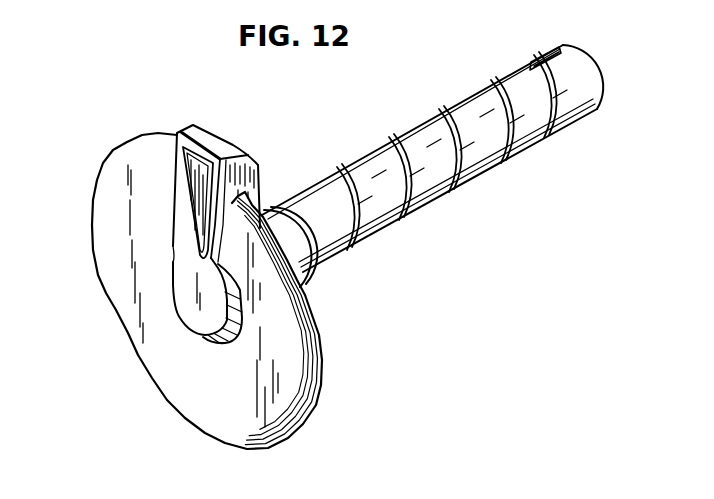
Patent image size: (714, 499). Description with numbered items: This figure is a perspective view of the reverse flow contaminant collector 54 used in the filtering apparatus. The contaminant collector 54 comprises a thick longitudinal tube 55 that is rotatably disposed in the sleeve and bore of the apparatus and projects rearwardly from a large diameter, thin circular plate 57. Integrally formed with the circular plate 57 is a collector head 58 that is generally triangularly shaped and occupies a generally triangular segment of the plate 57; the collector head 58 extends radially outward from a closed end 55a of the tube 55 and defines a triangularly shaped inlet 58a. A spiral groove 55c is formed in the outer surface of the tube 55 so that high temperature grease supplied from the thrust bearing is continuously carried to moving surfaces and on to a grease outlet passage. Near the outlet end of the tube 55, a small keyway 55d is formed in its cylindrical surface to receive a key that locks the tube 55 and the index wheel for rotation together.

The contaminant collector 54 is at (326, 227).
The longitudinal tube 55 is at (391, 131).
The closed end 55a is at (207, 317).
The spiral groove 55c is at (449, 164).
The keyway 55d is at (540, 61).
The circular plate 57 is at (323, 362).
The collector head 58 is at (209, 127).
The inlet 58a is at (197, 183).